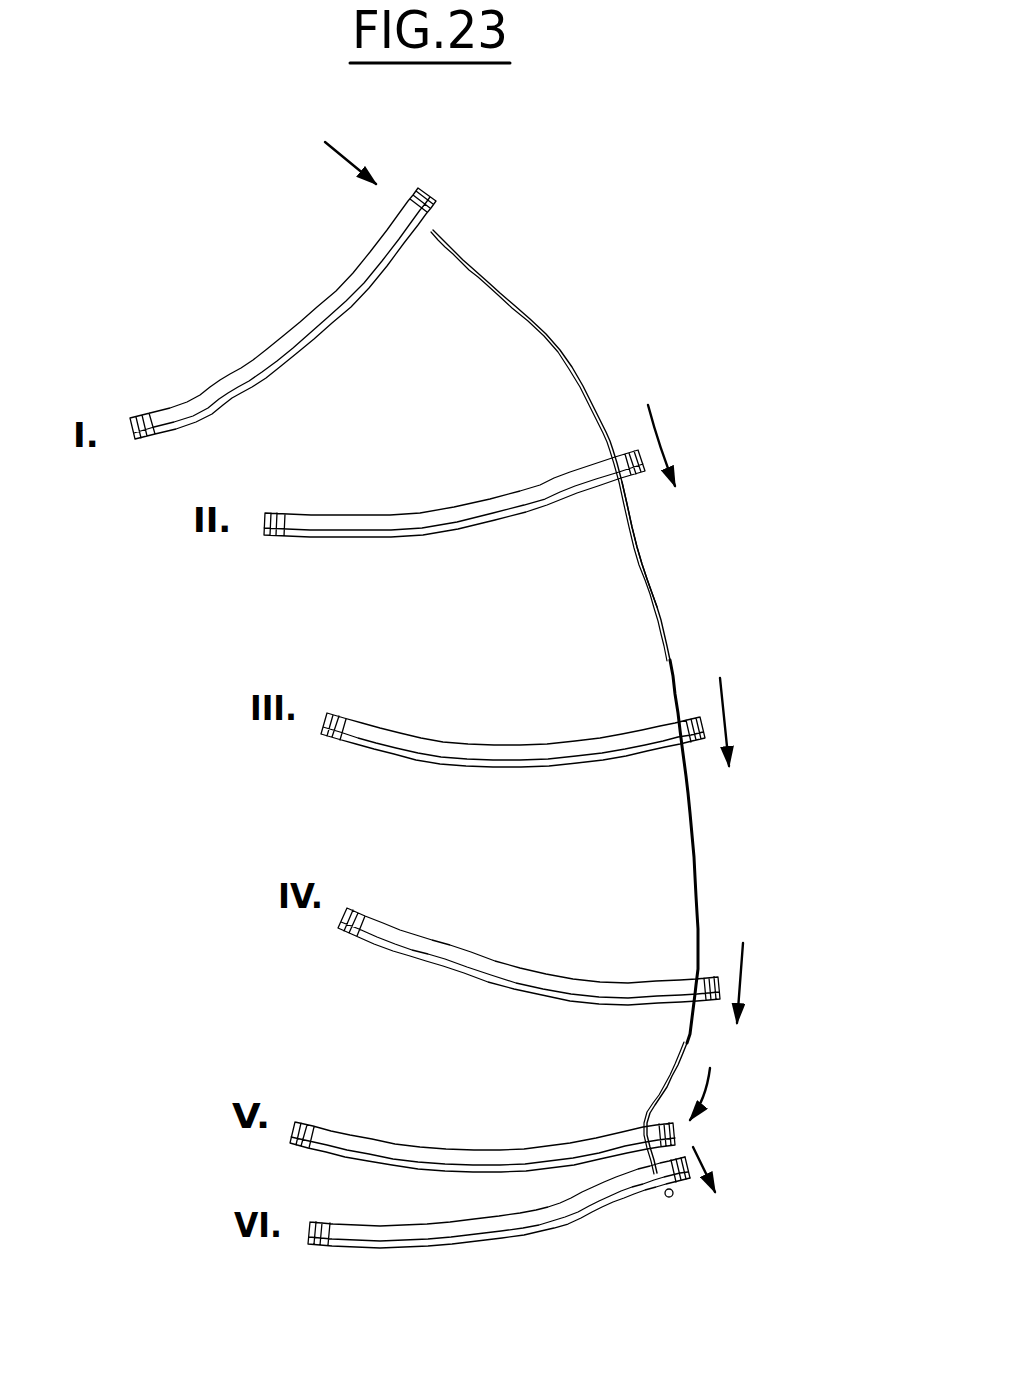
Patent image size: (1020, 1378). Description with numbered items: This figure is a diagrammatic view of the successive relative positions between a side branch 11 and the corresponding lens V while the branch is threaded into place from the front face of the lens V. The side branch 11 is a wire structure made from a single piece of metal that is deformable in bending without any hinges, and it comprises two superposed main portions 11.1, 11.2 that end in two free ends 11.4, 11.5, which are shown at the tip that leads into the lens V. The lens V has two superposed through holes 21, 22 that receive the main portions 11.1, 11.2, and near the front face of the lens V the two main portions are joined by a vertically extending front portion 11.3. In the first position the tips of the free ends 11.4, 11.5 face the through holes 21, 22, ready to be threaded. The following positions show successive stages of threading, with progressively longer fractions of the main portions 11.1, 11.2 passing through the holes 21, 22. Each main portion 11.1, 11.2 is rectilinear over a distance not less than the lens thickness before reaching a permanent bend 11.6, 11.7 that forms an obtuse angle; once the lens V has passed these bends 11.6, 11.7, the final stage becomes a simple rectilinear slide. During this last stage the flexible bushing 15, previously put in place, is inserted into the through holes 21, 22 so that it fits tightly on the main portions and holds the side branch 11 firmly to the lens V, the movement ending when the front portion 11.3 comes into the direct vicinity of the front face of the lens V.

The side branch 11 is at (587, 751).
The main portion 11.1 is at (596, 560).
The main portion 11.2 is at (636, 546).
The front portion 11.3 is at (669, 1197).
The free end 11.4 is at (561, 427).
The free end 11.5 is at (470, 255).
The permanent bend 11.6 is at (603, 1106).
The permanent bend 11.7 is at (646, 1124).
The flexible bushing 15 is at (684, 1180).
The through hole 21 is at (345, 281).
The through hole 22 is at (423, 190).
The lens V is at (451, 686).